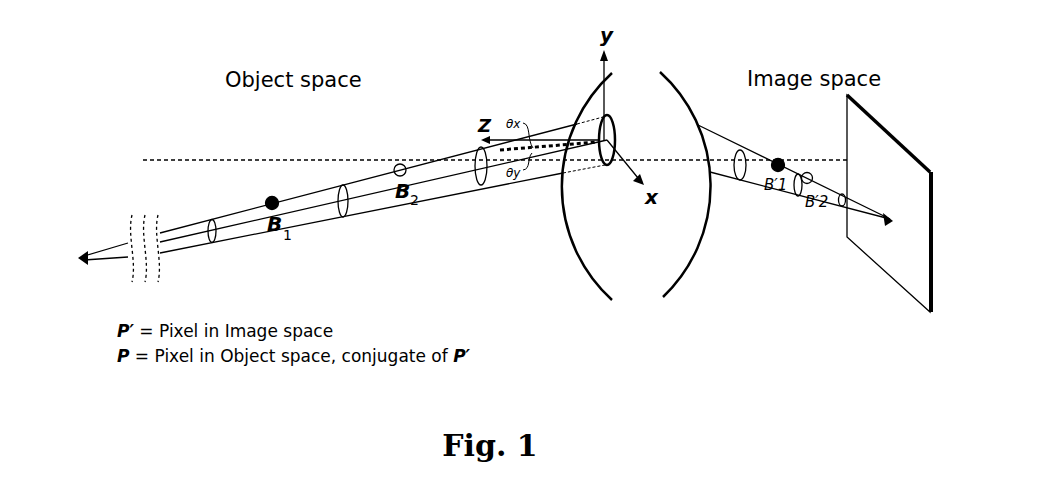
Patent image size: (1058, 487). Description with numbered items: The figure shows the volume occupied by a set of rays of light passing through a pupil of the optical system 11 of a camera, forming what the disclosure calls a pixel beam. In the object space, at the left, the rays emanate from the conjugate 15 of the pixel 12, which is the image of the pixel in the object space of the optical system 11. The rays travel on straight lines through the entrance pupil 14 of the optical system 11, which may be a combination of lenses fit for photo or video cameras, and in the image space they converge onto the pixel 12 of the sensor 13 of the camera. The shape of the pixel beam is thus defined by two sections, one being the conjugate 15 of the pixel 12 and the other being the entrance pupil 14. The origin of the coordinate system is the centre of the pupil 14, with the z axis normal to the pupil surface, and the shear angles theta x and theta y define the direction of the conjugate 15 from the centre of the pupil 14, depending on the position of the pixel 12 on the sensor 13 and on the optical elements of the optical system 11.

The optical system 11 is at (590, 213).
The pixel 12 is at (890, 220).
The sensor 13 is at (912, 280).
The entrance pupil 14 is at (612, 137).
The conjugate of the pixel 15 is at (78, 259).